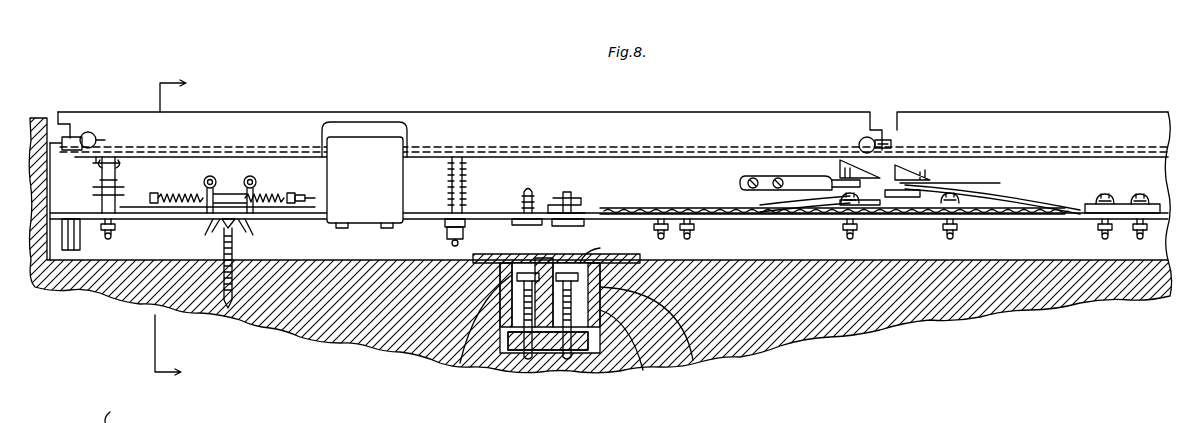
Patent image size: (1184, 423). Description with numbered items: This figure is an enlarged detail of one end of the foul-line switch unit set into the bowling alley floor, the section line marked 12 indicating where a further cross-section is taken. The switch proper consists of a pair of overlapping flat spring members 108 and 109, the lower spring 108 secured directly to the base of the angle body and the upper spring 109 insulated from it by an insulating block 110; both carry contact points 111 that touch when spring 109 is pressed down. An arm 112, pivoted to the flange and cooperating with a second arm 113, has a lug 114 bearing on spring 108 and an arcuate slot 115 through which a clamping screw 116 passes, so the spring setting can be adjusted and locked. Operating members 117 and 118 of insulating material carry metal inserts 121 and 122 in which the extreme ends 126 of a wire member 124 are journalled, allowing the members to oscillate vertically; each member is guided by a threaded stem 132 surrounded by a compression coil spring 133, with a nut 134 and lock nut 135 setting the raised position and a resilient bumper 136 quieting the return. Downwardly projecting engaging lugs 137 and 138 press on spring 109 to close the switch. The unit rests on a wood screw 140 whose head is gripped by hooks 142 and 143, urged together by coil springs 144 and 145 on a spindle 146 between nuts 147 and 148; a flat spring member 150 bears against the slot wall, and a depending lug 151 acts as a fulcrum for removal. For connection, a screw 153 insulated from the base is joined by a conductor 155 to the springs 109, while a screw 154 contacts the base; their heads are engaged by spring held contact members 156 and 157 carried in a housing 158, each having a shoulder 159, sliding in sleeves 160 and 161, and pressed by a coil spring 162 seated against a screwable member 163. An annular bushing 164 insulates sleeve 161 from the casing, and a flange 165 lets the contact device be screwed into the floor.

The section line 12- 12 is at (181, 228).
The flat spring member 108 is at (838, 222).
The flat spring member 109 is at (1010, 200).
The insulating block 110 is at (1090, 210).
The contact point 111 is at (890, 197).
The arm 112 is at (812, 178).
The arm 113 is at (782, 178).
The lug 114 is at (790, 205).
The arcuate slot 115 is at (755, 178).
The screw 116 is at (740, 185).
The operating member 117 is at (428, 110).
The operating member 118 is at (1088, 125).
The metal insert 121 is at (96, 132).
The metal insert 122 is at (868, 136).
The wire member 124 is at (540, 150).
The extreme end 126 is at (68, 112).
The threaded stem 132 is at (470, 183).
The compression coil spring 133 is at (450, 188).
The nut 134 is at (447, 233).
The lock nut 135 is at (450, 262).
The resilient bumper 136 is at (445, 224).
The engaging lug 137 is at (900, 160).
The engaging lug 138 is at (985, 150).
The wood screw 140 is at (232, 308).
The hook 142 is at (220, 236).
The hook 143 is at (250, 235).
The coil spring 144 is at (190, 195).
The coil spring 145 is at (268, 197).
The spindle 146 is at (300, 195).
The nut 147 is at (160, 207).
The nut 148 is at (285, 213).
The flat spring member 150 is at (366, 223).
The depending lug 151 is at (70, 250).
The screw 153 is at (585, 200).
The screw 154 is at (530, 192).
The conductor 155 is at (640, 207).
The spring held contact member 156 is at (490, 254).
The spring held contact member 157 is at (584, 225).
The housing 158 is at (643, 370).
The shoulder 159 is at (460, 363).
The sleeve 160 is at (512, 322).
The sleeve 161 is at (693, 360).
The coil spring 162 is at (548, 352).
The screwable member 163 is at (518, 352).
The annular bushing 164 is at (600, 248).
The flange 165 is at (512, 222).